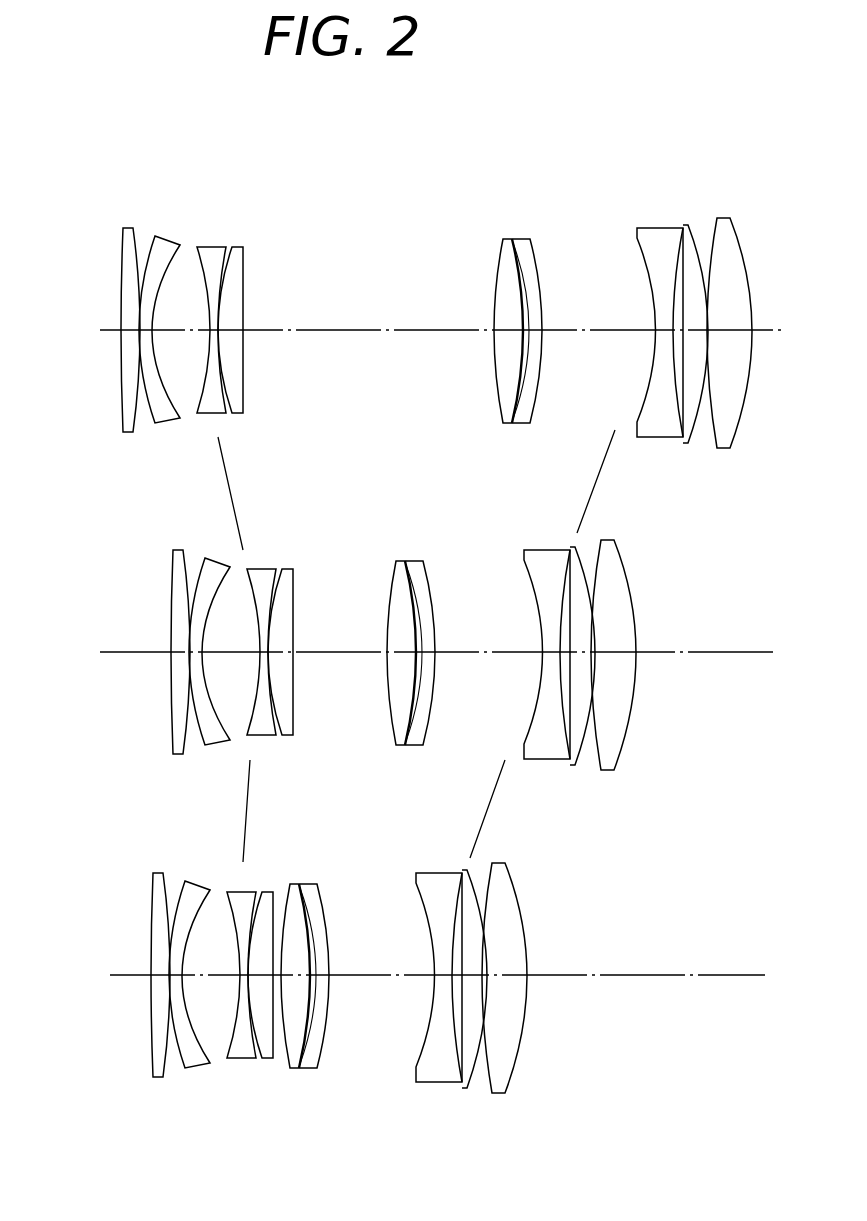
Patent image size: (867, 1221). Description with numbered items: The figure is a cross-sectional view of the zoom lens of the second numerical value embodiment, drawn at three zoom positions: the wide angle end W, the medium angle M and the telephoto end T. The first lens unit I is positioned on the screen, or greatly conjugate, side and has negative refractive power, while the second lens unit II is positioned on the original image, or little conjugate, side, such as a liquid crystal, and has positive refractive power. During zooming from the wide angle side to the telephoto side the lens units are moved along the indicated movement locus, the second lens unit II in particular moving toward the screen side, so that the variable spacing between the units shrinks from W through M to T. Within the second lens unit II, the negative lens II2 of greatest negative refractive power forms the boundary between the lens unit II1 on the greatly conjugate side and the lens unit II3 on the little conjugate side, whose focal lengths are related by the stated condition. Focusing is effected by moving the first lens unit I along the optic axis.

The first lens unit I is at (251, 173).
The second lens unit II is at (739, 158).
The lens unit on the greatly conjugate side in the second lens unit II1 is at (531, 212).
The negative lens II2 is at (681, 212).
The lens unit on the little conjugate side in the second lens unit II3 is at (739, 212).
The wide angle end W is at (69, 331).
The medium angle M is at (79, 653).
The telephoto end T is at (88, 976).